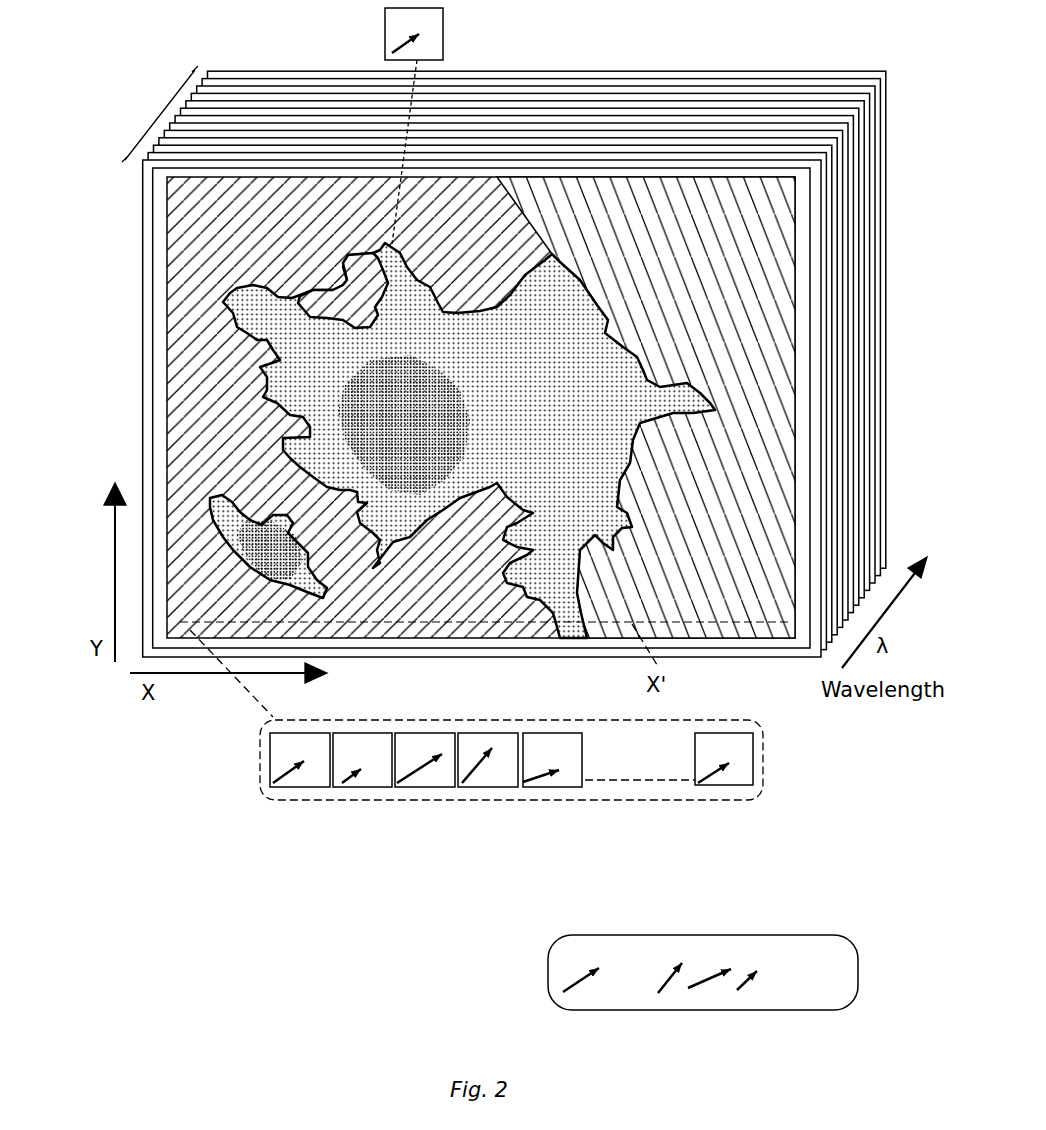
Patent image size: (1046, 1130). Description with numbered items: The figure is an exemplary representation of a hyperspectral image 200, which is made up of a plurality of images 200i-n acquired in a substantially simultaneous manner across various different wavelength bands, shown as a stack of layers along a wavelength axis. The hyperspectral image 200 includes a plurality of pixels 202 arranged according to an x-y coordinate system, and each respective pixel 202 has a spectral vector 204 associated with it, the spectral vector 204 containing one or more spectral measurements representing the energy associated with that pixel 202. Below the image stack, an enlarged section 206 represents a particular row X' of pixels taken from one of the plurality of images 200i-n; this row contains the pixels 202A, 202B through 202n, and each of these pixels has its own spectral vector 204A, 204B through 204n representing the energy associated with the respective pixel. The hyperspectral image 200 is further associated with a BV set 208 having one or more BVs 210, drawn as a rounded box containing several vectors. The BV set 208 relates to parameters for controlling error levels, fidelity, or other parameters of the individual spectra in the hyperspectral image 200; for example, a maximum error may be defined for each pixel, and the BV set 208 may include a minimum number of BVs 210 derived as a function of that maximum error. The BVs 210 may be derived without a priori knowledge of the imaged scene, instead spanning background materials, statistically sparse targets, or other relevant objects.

The hyperspectral image 200 is at (196, 274).
The plurality of images 200i-n is at (160, 95).
The pixel 202 is at (443, 20).
The spectral vector 204 is at (392, 50).
The pixel 202A is at (297, 788).
The spectral vector 204A is at (288, 775).
The pixel 202B is at (368, 788).
The spectral vector 204B is at (349, 786).
The pixel 202n is at (757, 775).
The spectral vector 204n is at (713, 786).
The enlarged section 206 is at (543, 801).
The BV set 208 is at (686, 934).
The BV 210 is at (570, 978).